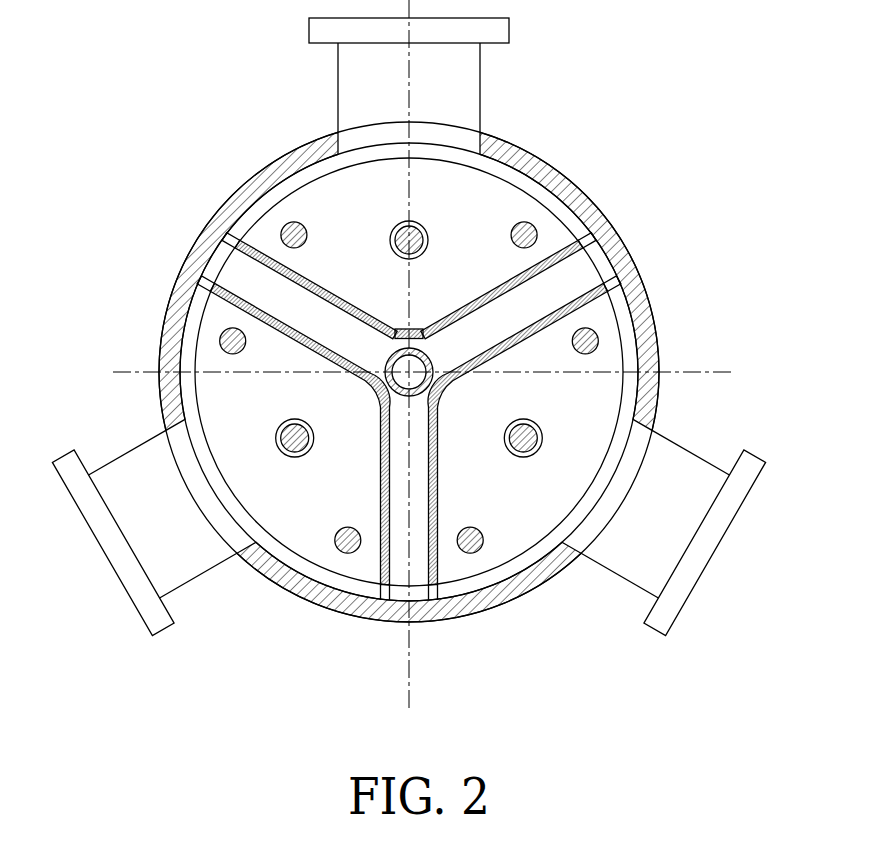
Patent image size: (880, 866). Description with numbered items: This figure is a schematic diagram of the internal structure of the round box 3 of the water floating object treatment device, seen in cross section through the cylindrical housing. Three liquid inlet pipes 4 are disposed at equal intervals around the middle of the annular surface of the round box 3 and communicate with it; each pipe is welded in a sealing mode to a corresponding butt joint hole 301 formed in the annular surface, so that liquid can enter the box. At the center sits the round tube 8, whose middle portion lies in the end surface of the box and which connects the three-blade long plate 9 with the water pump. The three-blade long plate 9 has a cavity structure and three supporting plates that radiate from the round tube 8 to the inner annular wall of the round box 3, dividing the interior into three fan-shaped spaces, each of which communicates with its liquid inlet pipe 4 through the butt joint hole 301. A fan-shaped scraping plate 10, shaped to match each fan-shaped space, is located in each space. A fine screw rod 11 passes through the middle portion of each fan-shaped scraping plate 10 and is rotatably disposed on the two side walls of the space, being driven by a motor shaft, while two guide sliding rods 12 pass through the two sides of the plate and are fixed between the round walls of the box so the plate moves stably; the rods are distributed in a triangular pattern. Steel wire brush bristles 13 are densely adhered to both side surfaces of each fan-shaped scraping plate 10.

The round box 3 is at (632, 290).
The liquid inlet pipe 4 is at (700, 565).
The round tube 8 is at (403, 331).
The three-blade long plate 9 is at (600, 262).
The fan-shaped scraping plate 10 is at (493, 187).
The fine screw rod 11 is at (398, 233).
The guide sliding rod 12 is at (302, 228).
The steel wire brush bristles 13 is at (335, 293).
The butt joint hole 301 is at (600, 520).